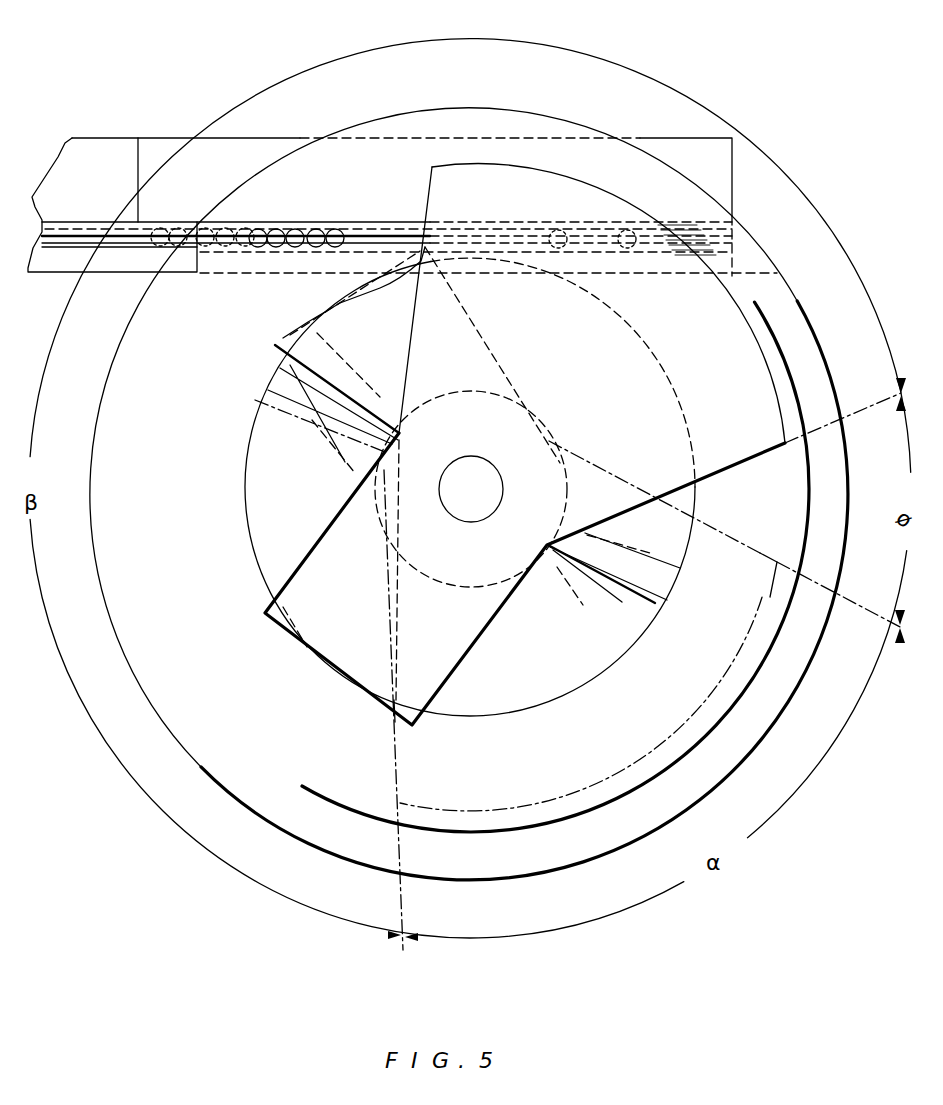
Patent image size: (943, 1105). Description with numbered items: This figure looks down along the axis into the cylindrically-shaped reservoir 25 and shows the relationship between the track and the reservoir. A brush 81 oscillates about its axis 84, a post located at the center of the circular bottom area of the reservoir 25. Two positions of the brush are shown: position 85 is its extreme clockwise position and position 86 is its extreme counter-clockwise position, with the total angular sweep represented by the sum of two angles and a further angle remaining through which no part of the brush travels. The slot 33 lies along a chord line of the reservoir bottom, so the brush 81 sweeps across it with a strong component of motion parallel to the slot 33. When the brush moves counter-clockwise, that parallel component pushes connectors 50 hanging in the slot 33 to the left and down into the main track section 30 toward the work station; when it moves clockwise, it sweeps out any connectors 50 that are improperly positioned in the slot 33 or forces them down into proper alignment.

The reservoir 25 is at (323, 847).
The main track section 30 is at (111, 118).
The slot 33 is at (153, 236).
The connectors 50 is at (560, 231).
The brush 81 is at (652, 447).
The axis 84 is at (472, 500).
The extreme clockwise position 85 is at (765, 338).
The extreme counter-clockwise position 86 is at (630, 752).